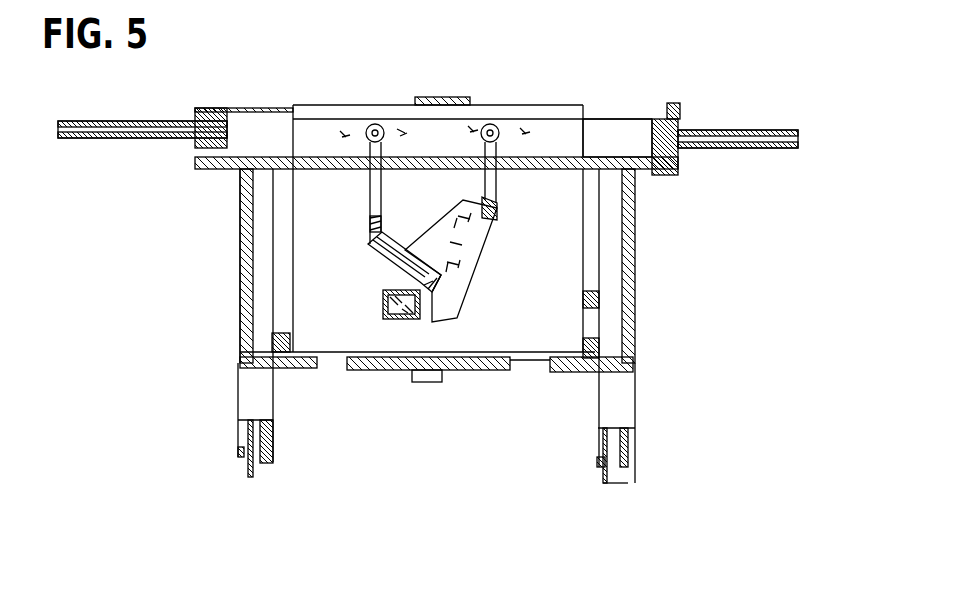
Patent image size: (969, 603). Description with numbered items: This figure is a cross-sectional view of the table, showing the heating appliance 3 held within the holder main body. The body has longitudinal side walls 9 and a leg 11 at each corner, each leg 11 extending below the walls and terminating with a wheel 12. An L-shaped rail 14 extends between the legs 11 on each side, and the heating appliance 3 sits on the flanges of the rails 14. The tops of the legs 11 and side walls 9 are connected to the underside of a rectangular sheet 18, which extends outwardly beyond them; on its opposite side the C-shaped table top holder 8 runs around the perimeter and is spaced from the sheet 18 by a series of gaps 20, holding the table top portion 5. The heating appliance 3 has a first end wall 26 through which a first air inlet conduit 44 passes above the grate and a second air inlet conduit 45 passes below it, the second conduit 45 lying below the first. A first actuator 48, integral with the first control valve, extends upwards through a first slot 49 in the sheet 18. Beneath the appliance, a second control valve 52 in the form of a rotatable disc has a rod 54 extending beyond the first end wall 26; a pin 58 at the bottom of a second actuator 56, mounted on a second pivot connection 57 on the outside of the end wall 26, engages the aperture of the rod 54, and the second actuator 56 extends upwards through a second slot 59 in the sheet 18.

The heating appliance 3 is at (599, 300).
The table top portion 5 is at (790, 130).
The table top holder 8 is at (682, 103).
The longitudinal side wall 9 is at (240, 300).
The leg 11 is at (236, 405).
The wheel 12 is at (253, 472).
The L-shaped rail 14 is at (568, 373).
The rectangular sheet 18 is at (560, 152).
The gap 20 is at (683, 160).
The first end wall 26 is at (307, 262).
The first air inlet conduit 44 is at (483, 258).
The second air inlet conduit 45 is at (394, 322).
The first actuator 48 is at (507, 143).
The first slot 49 is at (445, 98).
The second control valve 52 is at (510, 375).
The rod 54 is at (435, 368).
The second actuator 56 is at (363, 197).
The second pivot connection 57 is at (370, 222).
The pin 58 is at (393, 365).
The second slot 59 is at (360, 150).